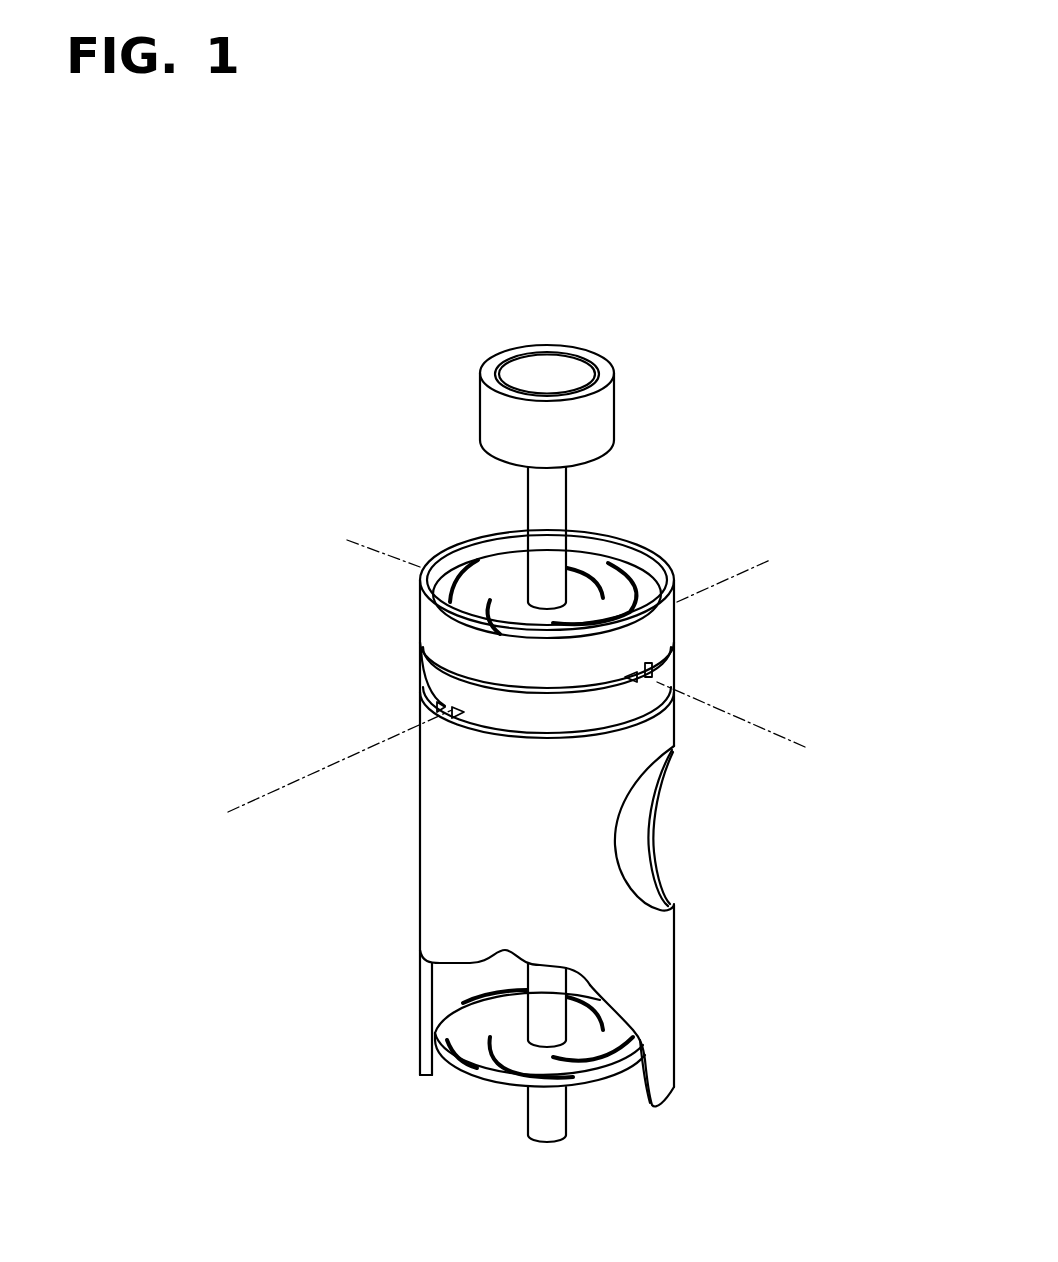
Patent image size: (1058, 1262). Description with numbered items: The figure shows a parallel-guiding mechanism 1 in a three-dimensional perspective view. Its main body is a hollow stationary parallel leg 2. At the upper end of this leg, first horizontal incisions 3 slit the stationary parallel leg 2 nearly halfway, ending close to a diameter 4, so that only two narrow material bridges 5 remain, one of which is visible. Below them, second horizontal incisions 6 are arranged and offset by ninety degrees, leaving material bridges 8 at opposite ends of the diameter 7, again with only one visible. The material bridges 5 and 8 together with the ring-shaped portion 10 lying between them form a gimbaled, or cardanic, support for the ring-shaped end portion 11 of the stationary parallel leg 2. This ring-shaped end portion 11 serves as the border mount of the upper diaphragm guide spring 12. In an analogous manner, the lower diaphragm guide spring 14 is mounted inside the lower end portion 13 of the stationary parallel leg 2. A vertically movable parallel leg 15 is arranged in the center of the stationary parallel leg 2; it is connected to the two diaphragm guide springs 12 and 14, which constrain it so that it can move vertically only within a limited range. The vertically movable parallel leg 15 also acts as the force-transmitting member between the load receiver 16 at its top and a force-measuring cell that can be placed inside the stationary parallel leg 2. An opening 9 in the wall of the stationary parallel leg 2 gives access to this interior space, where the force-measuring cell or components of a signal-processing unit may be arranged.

The parallel-guiding mechanism 1 is at (388, 443).
The stationary parallel leg 2 is at (482, 898).
The first horizontal incisions 3 is at (585, 687).
The diameter 4 is at (725, 721).
The material bridges 5 is at (640, 675).
The second horizontal incisions 6 is at (452, 717).
The diameter 7 is at (328, 770).
The material bridges 8 is at (443, 707).
The opening 9 is at (632, 845).
The ring-shaped portion 10 is at (435, 680).
The ring-shaped end portion 11 is at (452, 638).
The upper diaphragm guide spring 12 is at (512, 605).
The lower end portion 13 is at (655, 1057).
The lower diaphragm guide spring 14 is at (475, 1047).
The vertically movable parallel leg 15 is at (548, 497).
The load receiver 16 is at (583, 422).